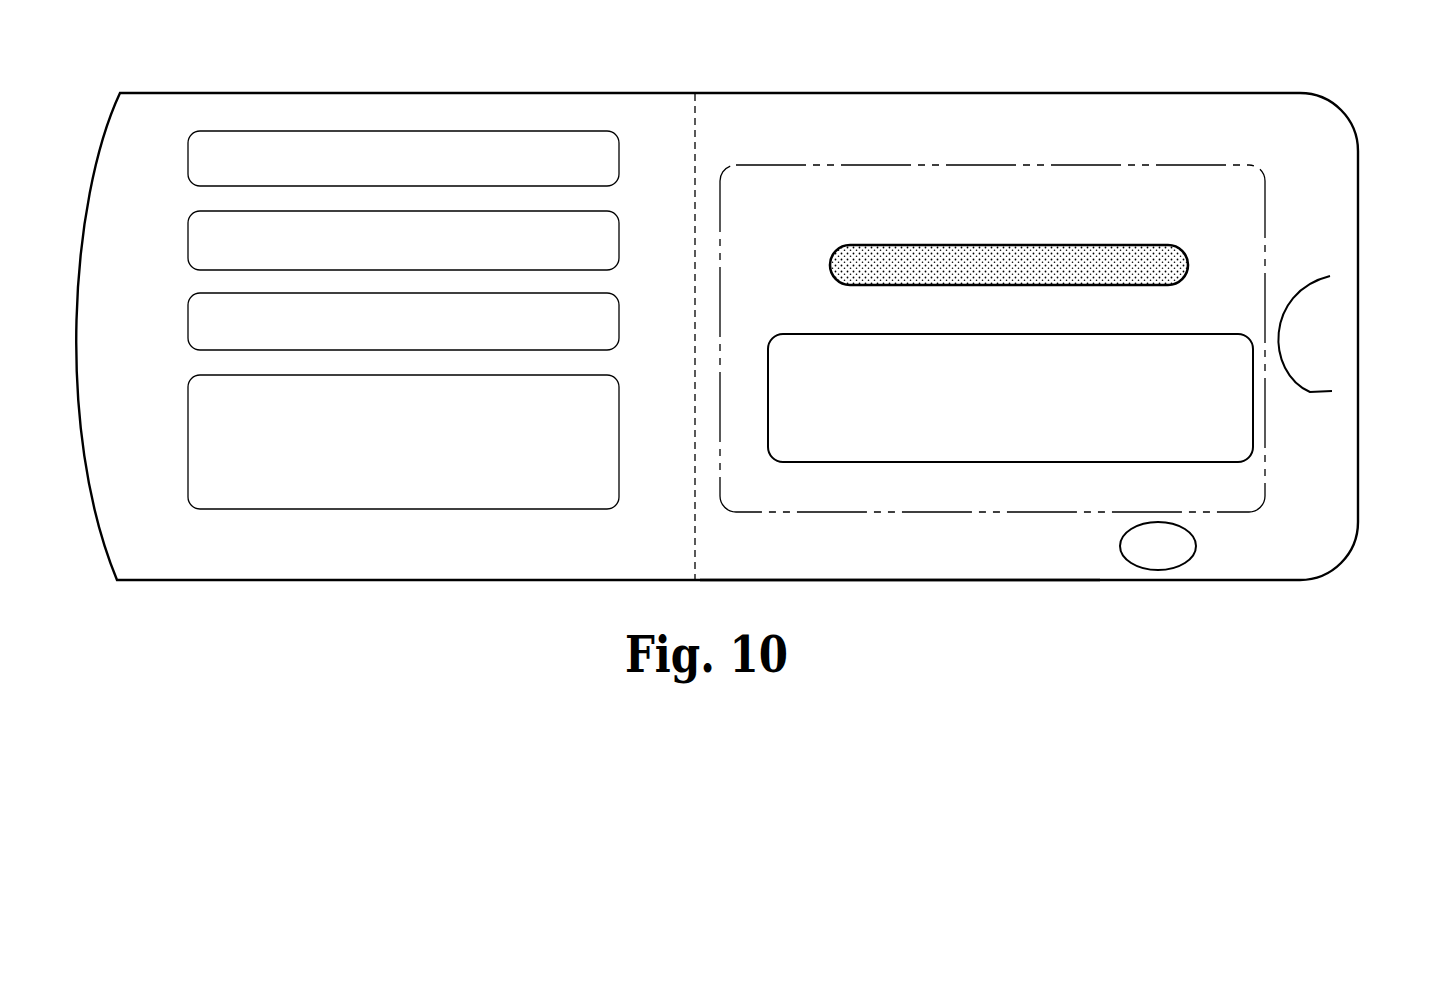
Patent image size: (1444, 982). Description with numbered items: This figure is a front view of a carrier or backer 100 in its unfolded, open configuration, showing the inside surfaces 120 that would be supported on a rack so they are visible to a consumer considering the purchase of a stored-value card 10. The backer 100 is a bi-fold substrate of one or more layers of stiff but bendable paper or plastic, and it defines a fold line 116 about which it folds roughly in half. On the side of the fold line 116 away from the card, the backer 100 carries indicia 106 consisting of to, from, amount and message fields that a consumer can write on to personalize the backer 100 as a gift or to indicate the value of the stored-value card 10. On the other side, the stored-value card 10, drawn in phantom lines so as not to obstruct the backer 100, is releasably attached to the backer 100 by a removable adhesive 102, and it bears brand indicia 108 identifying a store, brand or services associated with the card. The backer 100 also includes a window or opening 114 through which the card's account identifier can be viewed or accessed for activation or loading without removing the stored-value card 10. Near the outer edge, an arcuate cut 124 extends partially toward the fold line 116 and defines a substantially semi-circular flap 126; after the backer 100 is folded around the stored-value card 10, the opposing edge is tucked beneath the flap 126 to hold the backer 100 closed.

The backer 100 is at (1148, 52).
The indicia 106 is at (427, 131).
The fold line 116 is at (698, 118).
The stored-value card 10 is at (1245, 204).
The removable adhesive 102 is at (1163, 263).
The window or opening 114 is at (1248, 430).
The brand indicia 108 is at (1125, 563).
The flap 126 is at (1290, 338).
The cut 124 is at (1313, 393).
The inside surfaces 120 is at (877, 553).